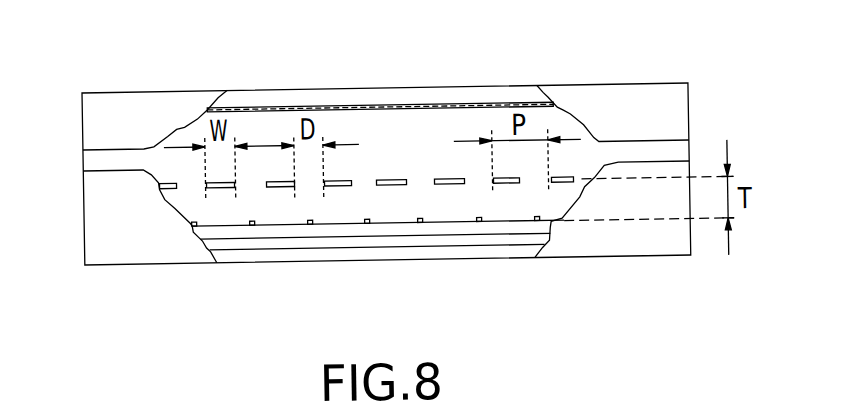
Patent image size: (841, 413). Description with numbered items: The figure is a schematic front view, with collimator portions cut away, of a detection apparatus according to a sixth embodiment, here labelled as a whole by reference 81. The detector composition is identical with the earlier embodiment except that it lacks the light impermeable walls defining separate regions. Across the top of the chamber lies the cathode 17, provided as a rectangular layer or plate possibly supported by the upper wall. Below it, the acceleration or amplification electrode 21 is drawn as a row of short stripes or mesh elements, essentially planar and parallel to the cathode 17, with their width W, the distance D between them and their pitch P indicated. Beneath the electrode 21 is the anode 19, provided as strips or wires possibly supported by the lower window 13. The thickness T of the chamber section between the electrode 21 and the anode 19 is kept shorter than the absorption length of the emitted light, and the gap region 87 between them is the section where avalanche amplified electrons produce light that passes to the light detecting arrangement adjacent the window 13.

The assembly 81 is at (605, 66).
The cathode 17 is at (418, 112).
The acceleration or amplification electrode 21 is at (392, 183).
The lower window 13 is at (280, 235).
The anode 19 is at (372, 233).
The lower block 87 is at (443, 213).